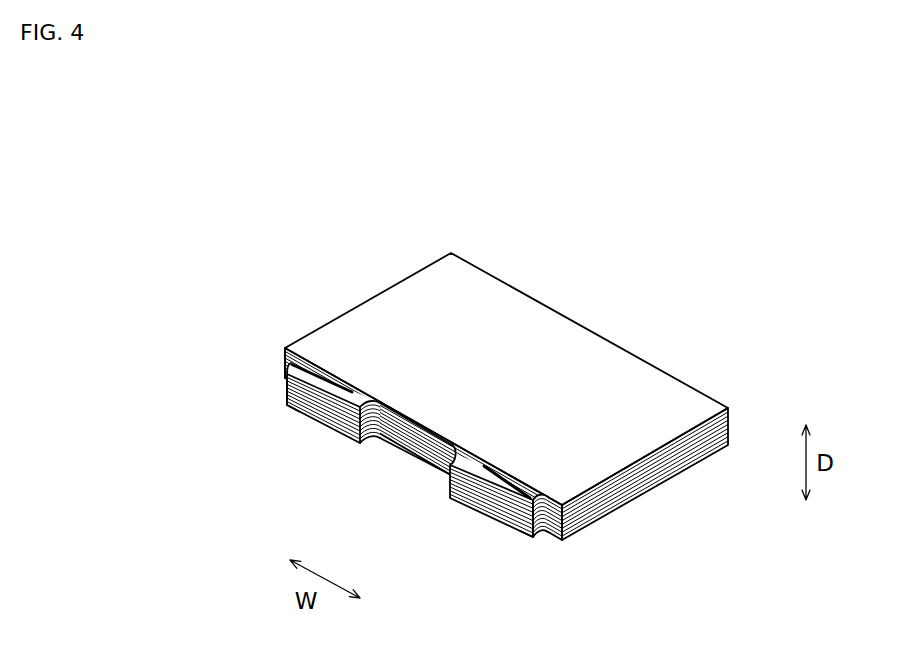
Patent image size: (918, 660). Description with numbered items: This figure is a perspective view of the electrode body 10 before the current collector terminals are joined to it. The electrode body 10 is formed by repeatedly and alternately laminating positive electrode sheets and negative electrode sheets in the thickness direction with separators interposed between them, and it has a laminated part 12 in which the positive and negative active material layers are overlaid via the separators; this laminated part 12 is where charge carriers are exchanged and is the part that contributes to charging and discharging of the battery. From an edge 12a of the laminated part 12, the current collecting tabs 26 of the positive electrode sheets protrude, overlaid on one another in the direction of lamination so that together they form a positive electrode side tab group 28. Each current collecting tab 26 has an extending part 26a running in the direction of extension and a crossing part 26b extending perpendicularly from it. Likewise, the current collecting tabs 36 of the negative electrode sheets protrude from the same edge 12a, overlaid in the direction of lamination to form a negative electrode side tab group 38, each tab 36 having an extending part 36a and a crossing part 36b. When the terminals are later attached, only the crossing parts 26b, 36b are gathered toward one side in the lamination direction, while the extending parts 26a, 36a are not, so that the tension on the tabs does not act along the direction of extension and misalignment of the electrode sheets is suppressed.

The electrode body 10 is at (329, 319).
The laminated part 12 is at (586, 475).
The edge of the laminated part 12a is at (418, 442).
The current collecting tab 26 is at (317, 409).
The extending part 26a is at (365, 396).
The crossing part 26b is at (328, 388).
The positive electrode side tab group 28 is at (301, 414).
The current collecting tab 36 is at (475, 511).
The extending part 36a is at (472, 460).
The crossing part 36b is at (500, 483).
The negative electrode side tab group 38 is at (511, 537).